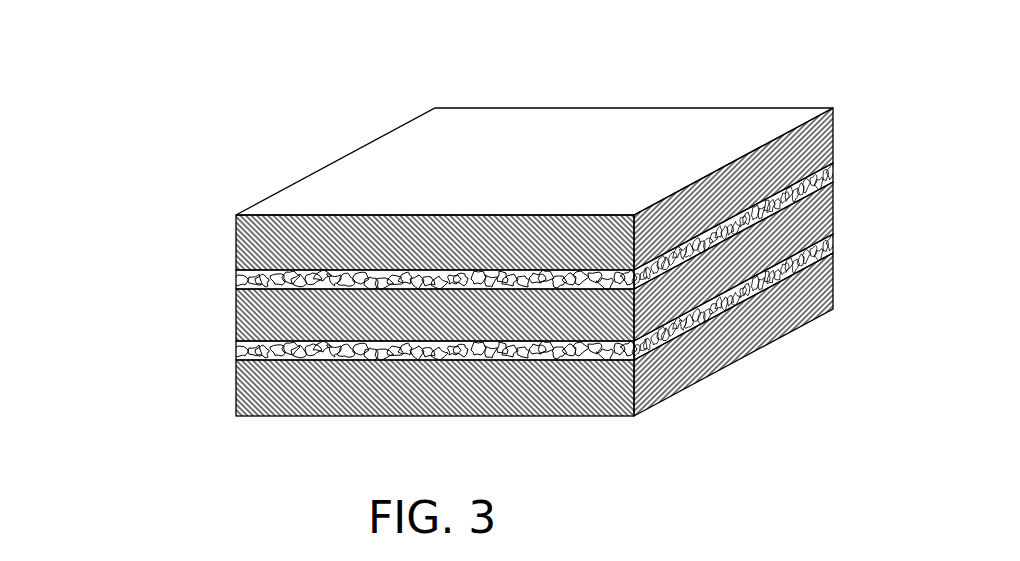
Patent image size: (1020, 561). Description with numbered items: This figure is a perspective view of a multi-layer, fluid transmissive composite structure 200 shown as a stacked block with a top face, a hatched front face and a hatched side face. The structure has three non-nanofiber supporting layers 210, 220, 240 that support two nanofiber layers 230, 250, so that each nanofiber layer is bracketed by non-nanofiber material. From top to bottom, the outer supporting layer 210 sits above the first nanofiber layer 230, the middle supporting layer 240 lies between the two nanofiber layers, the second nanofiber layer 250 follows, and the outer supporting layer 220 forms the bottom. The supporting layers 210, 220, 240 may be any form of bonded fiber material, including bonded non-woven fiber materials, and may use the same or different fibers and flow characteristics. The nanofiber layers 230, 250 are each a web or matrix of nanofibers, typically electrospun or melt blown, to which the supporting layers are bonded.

The composite structure 200 is at (338, 84).
The supporting layer 210 is at (234, 243).
The supporting layer 220 is at (234, 384).
The nanofiber layer 230 is at (234, 281).
The supporting layer 240 is at (234, 316).
The nanofiber layer 250 is at (234, 347).